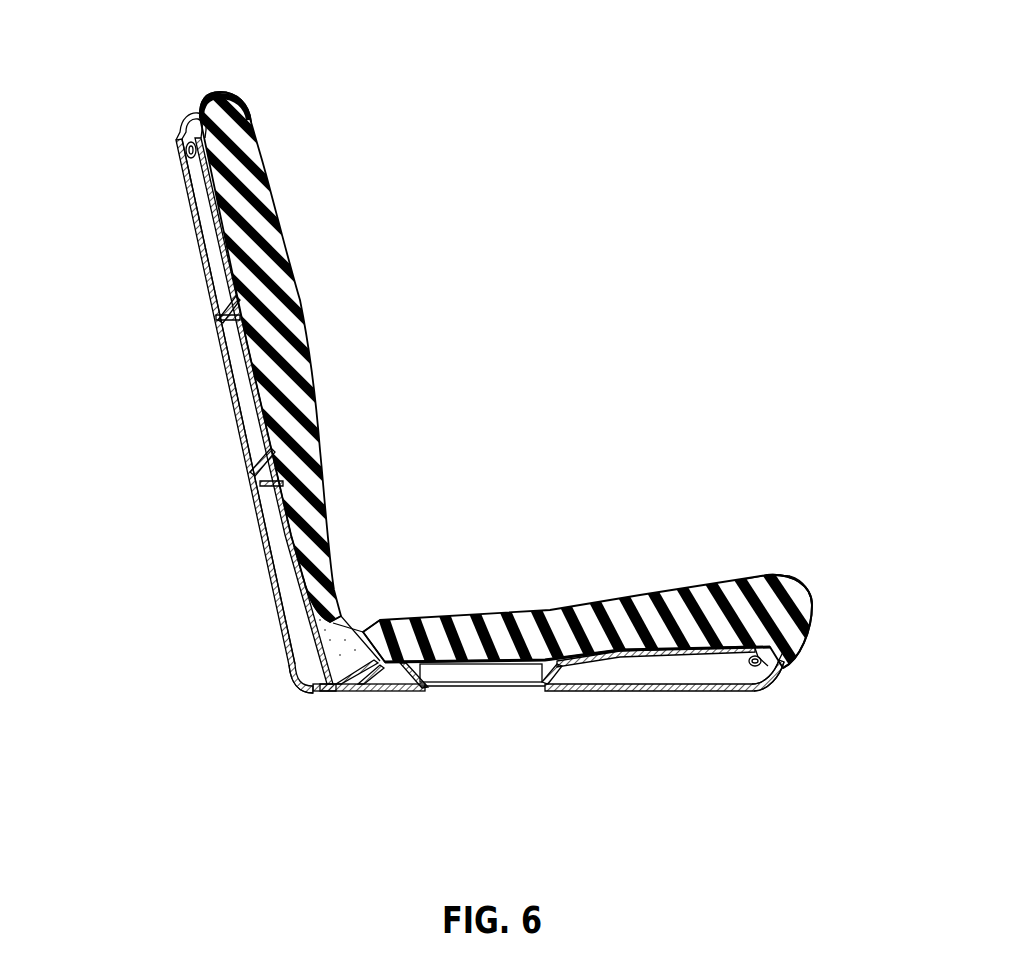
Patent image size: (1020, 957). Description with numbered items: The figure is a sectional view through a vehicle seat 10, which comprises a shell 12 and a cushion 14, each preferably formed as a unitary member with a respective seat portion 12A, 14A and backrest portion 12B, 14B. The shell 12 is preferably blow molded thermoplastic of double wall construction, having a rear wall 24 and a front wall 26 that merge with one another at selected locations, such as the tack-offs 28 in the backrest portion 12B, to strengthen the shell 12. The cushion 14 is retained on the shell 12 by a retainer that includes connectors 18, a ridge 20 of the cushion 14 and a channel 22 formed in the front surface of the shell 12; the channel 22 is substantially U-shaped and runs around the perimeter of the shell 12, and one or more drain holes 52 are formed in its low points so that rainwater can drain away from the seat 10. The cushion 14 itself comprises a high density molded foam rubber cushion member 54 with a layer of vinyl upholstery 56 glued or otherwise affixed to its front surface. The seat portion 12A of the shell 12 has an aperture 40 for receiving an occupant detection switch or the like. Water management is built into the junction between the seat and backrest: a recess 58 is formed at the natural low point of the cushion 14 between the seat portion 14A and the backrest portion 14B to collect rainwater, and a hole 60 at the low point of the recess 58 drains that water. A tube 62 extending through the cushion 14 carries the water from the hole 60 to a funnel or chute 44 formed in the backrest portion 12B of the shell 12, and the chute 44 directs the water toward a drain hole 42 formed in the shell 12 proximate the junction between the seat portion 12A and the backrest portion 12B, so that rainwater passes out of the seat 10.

The vehicle seat 10 is at (281, 86).
The shell 12 is at (604, 716).
The seat portion of the shell 12A is at (400, 690).
The backrest portion of the shell 12B is at (202, 283).
The cushion 14 is at (319, 310).
The seat portion of the cushion 14A is at (552, 610).
The backrest portion of the cushion 14B is at (280, 235).
The connectors 18 is at (183, 130).
The ridge 20 is at (250, 127).
The channel 22 is at (186, 150).
The rear wall 24 is at (273, 603).
The front wall 26 is at (262, 556).
The tack-offs 28 is at (243, 458).
The aperture 40 is at (520, 683).
The drain hole 42 is at (333, 697).
The chute 44 is at (300, 688).
The drain holes 52 is at (769, 672).
The cushion member 54 is at (810, 587).
The vinyl upholstery 56 is at (765, 573).
The recess 58 is at (377, 623).
The hole 60 is at (357, 623).
The tube 62 is at (345, 643).